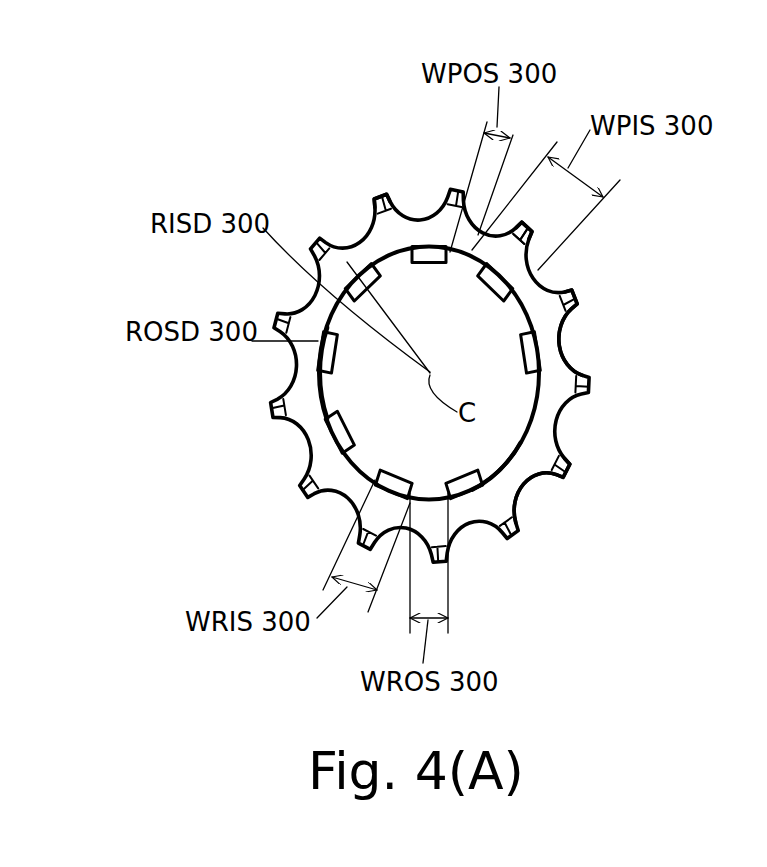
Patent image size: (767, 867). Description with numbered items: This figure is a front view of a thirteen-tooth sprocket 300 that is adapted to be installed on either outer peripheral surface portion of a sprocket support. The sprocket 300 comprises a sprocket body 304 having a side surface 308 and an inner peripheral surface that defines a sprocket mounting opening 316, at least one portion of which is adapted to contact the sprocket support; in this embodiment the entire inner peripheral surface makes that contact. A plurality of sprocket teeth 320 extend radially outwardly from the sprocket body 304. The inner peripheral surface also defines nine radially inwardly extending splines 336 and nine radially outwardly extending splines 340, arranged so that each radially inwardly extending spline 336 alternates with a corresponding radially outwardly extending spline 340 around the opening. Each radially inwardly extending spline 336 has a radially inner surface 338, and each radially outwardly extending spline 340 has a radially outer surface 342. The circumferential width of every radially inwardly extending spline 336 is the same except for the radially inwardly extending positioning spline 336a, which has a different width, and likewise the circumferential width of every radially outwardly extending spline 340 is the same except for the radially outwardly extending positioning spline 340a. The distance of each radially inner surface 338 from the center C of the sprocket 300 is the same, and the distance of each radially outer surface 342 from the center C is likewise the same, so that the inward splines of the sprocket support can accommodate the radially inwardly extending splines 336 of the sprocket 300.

The sprocket 300 is at (650, 90).
The sprocket body 304 is at (550, 343).
The side surface 308 is at (538, 315).
The sprocket mounting opening 316 is at (513, 393).
The sprocket teeth 320 is at (380, 197).
The radially inwardly extending spline 336 is at (330, 437).
The radially inwardly extending positioning spline 336a is at (497, 293).
The radially inner surface 338 is at (318, 395).
The radially outwardly extending spline 340 is at (517, 498).
The radially outwardly extending positioning spline 340a is at (447, 263).
The radially outer surface 342 is at (513, 460).